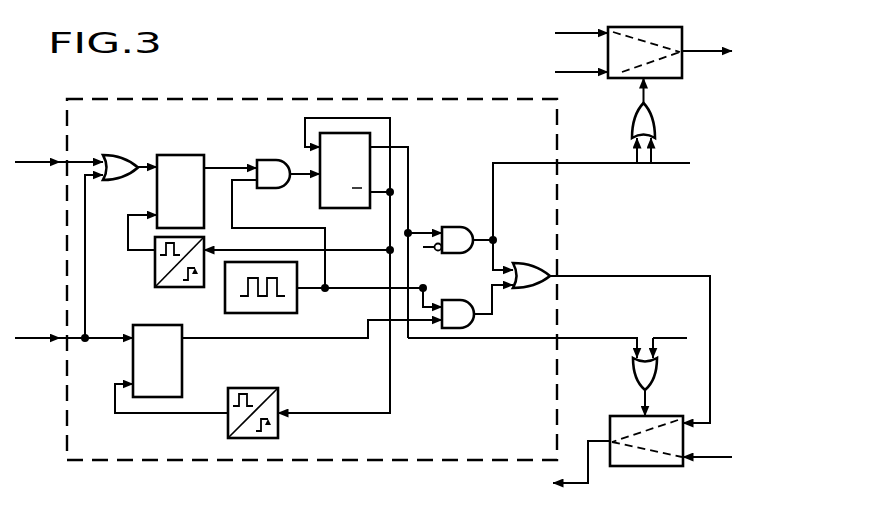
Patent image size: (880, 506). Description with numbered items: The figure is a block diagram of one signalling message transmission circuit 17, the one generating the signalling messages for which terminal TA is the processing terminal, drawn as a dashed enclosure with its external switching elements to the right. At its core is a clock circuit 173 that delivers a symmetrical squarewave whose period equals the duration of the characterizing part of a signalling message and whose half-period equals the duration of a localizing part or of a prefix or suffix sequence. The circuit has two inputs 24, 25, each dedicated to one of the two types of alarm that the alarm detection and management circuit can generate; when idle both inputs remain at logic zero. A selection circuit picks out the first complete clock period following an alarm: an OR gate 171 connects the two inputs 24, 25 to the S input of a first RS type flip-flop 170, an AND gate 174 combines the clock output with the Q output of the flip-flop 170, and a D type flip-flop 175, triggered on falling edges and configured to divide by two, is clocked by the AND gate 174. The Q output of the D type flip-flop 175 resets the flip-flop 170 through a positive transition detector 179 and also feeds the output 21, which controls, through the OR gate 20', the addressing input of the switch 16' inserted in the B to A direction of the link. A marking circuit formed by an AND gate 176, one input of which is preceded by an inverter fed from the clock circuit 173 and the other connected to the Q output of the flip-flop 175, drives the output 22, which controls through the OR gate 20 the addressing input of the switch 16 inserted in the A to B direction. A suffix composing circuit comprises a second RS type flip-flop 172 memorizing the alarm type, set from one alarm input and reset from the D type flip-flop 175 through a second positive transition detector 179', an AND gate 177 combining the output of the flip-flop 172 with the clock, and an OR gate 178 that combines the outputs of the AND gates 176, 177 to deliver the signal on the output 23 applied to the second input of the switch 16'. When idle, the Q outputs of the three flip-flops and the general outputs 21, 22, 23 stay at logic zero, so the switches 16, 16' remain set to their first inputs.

The signalling transmission circuit 17 is at (214, 98).
The first input 24 is at (38, 162).
The second input 25 is at (40, 338).
The OR gate 171 is at (125, 128).
The first RS type flip-flop 170 is at (197, 128).
The AND gate 174 is at (268, 160).
The D type flip-flop 175 is at (346, 136).
The positive transition detector 179 is at (246, 258).
The clock circuit 173 is at (298, 300).
The AND gate 176 is at (455, 228).
The AND gate 177 is at (456, 302).
The OR gate 178 is at (522, 288).
The second RS type flip-flop 172 is at (168, 376).
The positive transition detector 179' is at (281, 401).
The output 22 is at (583, 165).
The output 23 is at (590, 275).
The output 21 is at (590, 337).
The OR gate 20 is at (664, 120).
The switch 16 is at (643, 72).
The OR gate 20' is at (635, 377).
The switch 16' is at (642, 428).